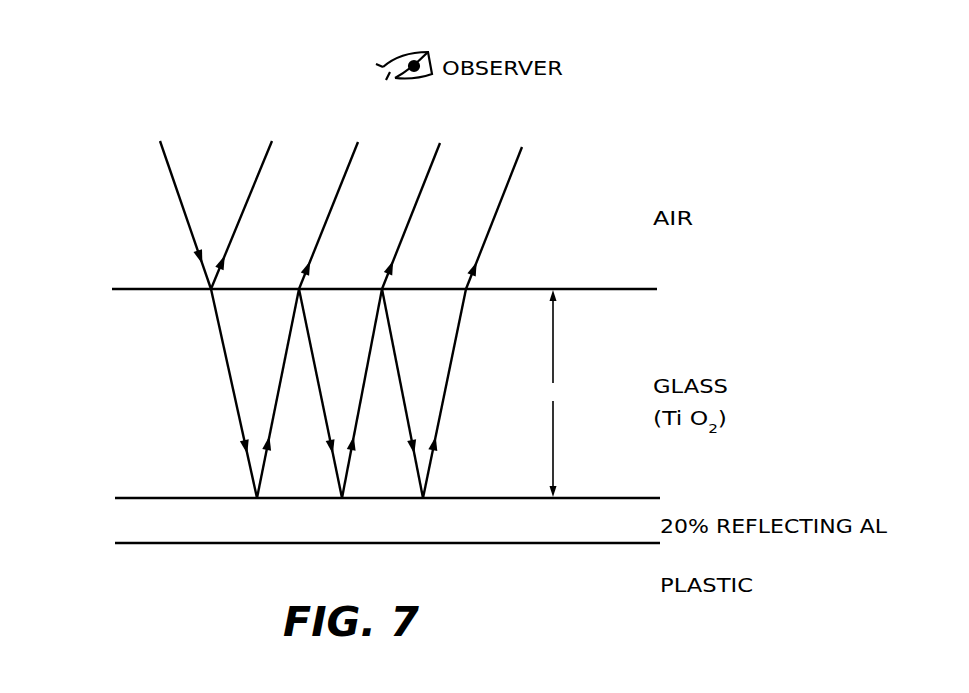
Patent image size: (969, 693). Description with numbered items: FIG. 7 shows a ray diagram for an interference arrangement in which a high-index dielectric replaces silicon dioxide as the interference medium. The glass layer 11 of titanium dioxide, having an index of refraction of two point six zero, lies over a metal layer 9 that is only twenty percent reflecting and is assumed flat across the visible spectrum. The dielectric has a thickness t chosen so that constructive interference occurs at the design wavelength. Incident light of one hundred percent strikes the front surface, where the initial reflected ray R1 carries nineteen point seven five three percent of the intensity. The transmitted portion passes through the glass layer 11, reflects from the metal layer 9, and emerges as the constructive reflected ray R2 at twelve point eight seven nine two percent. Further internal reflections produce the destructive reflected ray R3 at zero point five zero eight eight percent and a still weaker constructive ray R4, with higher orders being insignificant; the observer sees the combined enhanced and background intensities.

The glass (TiO2) layer 11 is at (132, 388).
The metal layer 9 is at (127, 517).
The thickness t is at (553, 393).
The initial reflected ray R1 is at (239, 215).
The constructive reflected ray R2 is at (347, 189).
The destructive reflected ray R3 is at (431, 196).
The fourth reflected ray (constructive) R4 is at (518, 188).